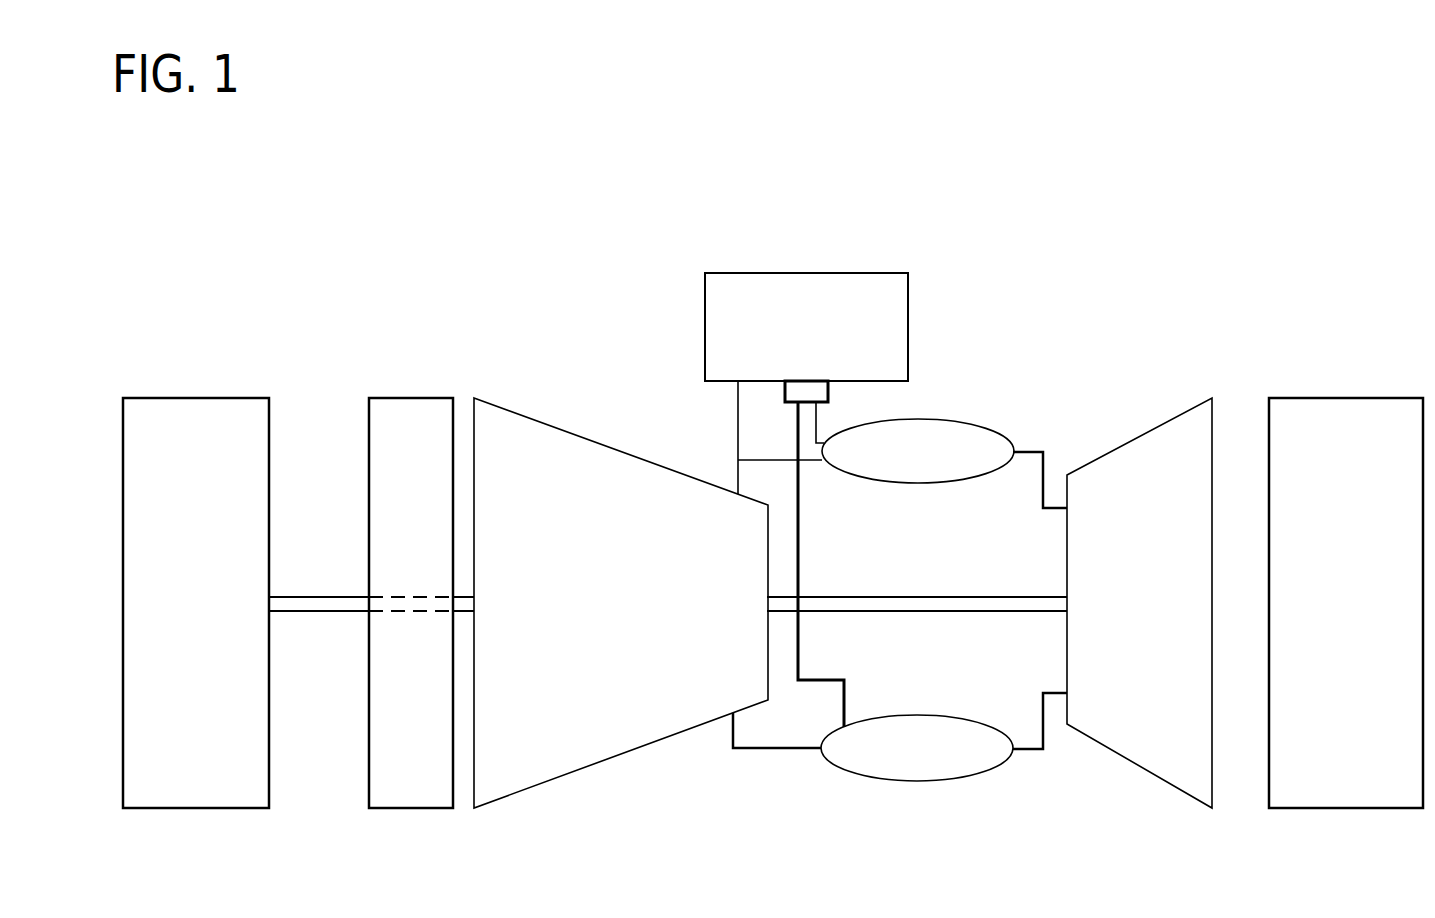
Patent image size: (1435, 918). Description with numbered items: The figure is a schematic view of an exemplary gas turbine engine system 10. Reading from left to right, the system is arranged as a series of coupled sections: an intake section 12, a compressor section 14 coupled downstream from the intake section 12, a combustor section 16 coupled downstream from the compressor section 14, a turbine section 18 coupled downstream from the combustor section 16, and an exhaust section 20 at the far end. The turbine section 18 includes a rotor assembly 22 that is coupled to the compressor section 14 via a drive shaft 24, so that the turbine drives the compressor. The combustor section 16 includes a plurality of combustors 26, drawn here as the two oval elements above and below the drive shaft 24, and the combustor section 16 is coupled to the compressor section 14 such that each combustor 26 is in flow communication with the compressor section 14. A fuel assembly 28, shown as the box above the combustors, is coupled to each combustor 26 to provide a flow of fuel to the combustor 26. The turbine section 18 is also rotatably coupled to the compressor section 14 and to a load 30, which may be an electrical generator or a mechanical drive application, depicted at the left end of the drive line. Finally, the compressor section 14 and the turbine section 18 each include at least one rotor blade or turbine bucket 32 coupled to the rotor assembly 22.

The gas turbine engine system 10 is at (247, 242).
The intake section 12 is at (420, 398).
The compressor section 14 is at (605, 760).
The combustor section 16 is at (995, 400).
The turbine section 18 is at (1110, 452).
The exhaust section 20 is at (1323, 398).
The rotor assembly 22 is at (1035, 628).
The drive shaft 24 is at (925, 596).
The combustor 26 is at (918, 483).
The fuel assembly 28 is at (760, 273).
The load 30 is at (172, 398).
The rotor blade or turbine bucket 32 is at (1117, 787).